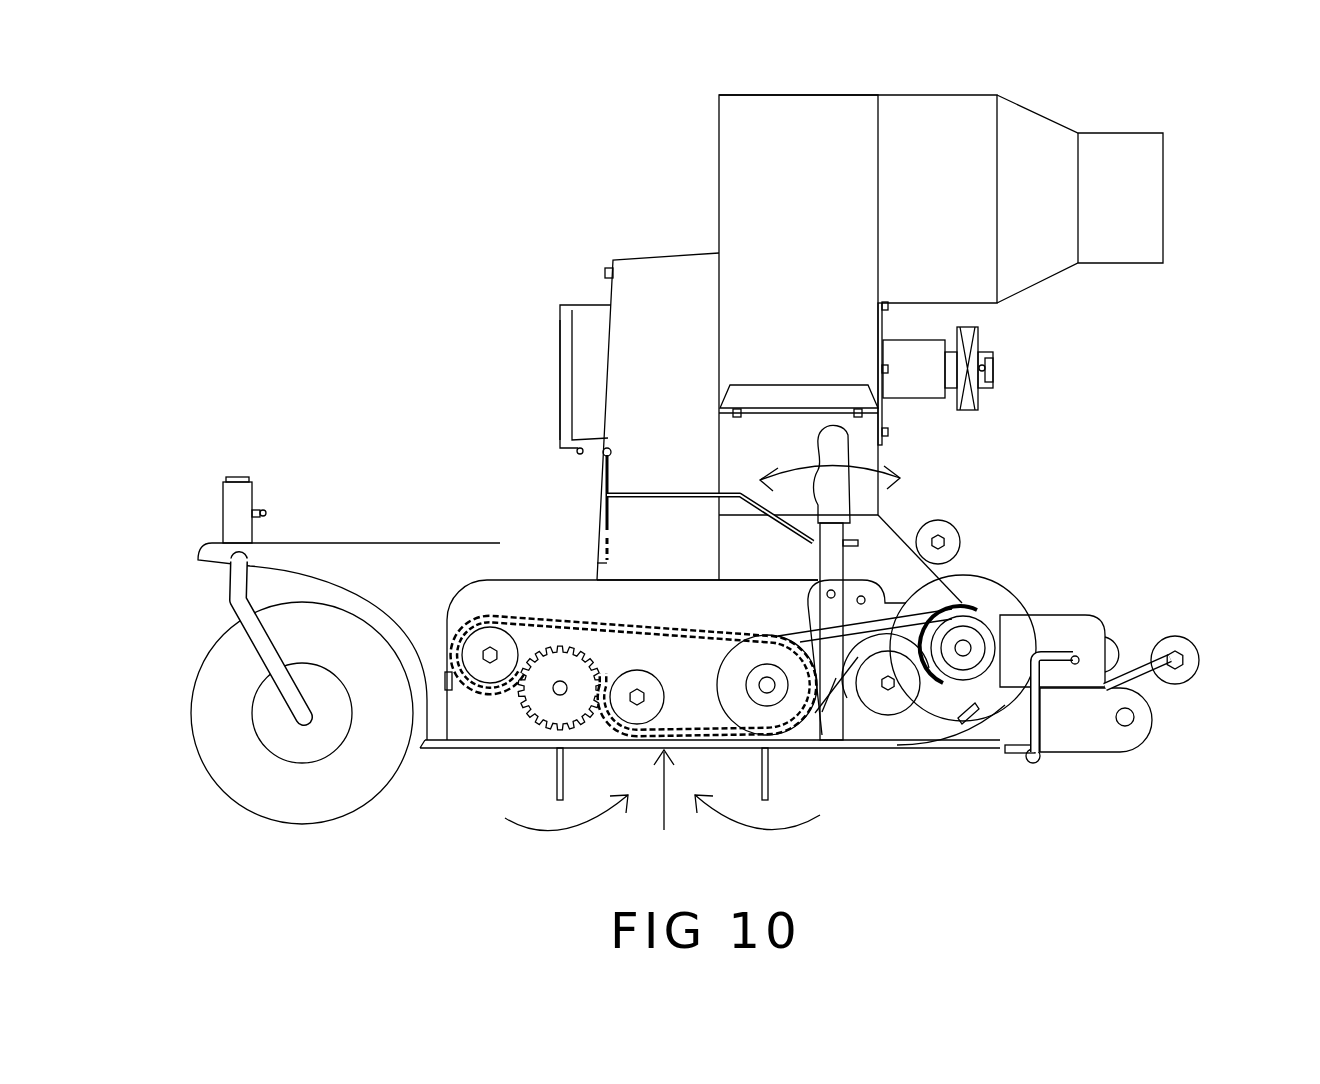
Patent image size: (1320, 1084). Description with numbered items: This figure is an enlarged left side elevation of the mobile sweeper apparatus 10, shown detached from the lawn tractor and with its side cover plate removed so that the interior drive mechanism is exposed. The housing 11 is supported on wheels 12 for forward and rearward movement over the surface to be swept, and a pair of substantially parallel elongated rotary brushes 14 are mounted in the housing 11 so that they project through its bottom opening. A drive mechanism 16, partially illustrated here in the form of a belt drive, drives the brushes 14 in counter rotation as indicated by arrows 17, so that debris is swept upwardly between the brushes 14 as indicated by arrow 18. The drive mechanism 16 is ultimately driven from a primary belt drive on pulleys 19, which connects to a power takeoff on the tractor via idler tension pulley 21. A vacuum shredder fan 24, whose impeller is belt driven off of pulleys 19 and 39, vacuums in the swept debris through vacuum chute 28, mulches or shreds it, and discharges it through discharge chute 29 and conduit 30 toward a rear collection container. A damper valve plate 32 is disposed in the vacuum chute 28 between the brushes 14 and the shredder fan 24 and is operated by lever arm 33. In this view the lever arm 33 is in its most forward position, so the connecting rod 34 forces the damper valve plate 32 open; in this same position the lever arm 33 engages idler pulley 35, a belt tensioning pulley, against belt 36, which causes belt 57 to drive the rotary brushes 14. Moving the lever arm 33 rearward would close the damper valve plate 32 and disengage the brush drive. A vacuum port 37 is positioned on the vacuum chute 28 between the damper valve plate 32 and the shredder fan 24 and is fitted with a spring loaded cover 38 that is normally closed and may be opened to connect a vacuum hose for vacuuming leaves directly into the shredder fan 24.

The mobile sweeper apparatus 10 is at (510, 287).
The housing 11 is at (719, 175).
The wheels 12 is at (348, 782).
The rotary brushes 14 is at (555, 788).
The drive mechanism 16 is at (483, 580).
The arrows 17 is at (662, 813).
The arrow 18 is at (664, 807).
The pulleys 19 is at (995, 597).
The idler tension pulley 21 is at (1152, 617).
The vacuum shredder fan 24 is at (719, 120).
The vacuum chute 28 is at (647, 543).
The discharge chute 29 is at (955, 220).
The conduit 30 is at (1128, 190).
The damper valve plate 32 is at (607, 503).
The operating lever arm 33 is at (833, 442).
The connecting rod 34 is at (647, 493).
The idler pulley 35 is at (900, 697).
The belt 36 is at (837, 677).
The vacuum port 37 is at (588, 327).
The spring loaded cover 38 is at (562, 366).
The pulley 39 is at (989, 465).
The belt 57 is at (612, 632).